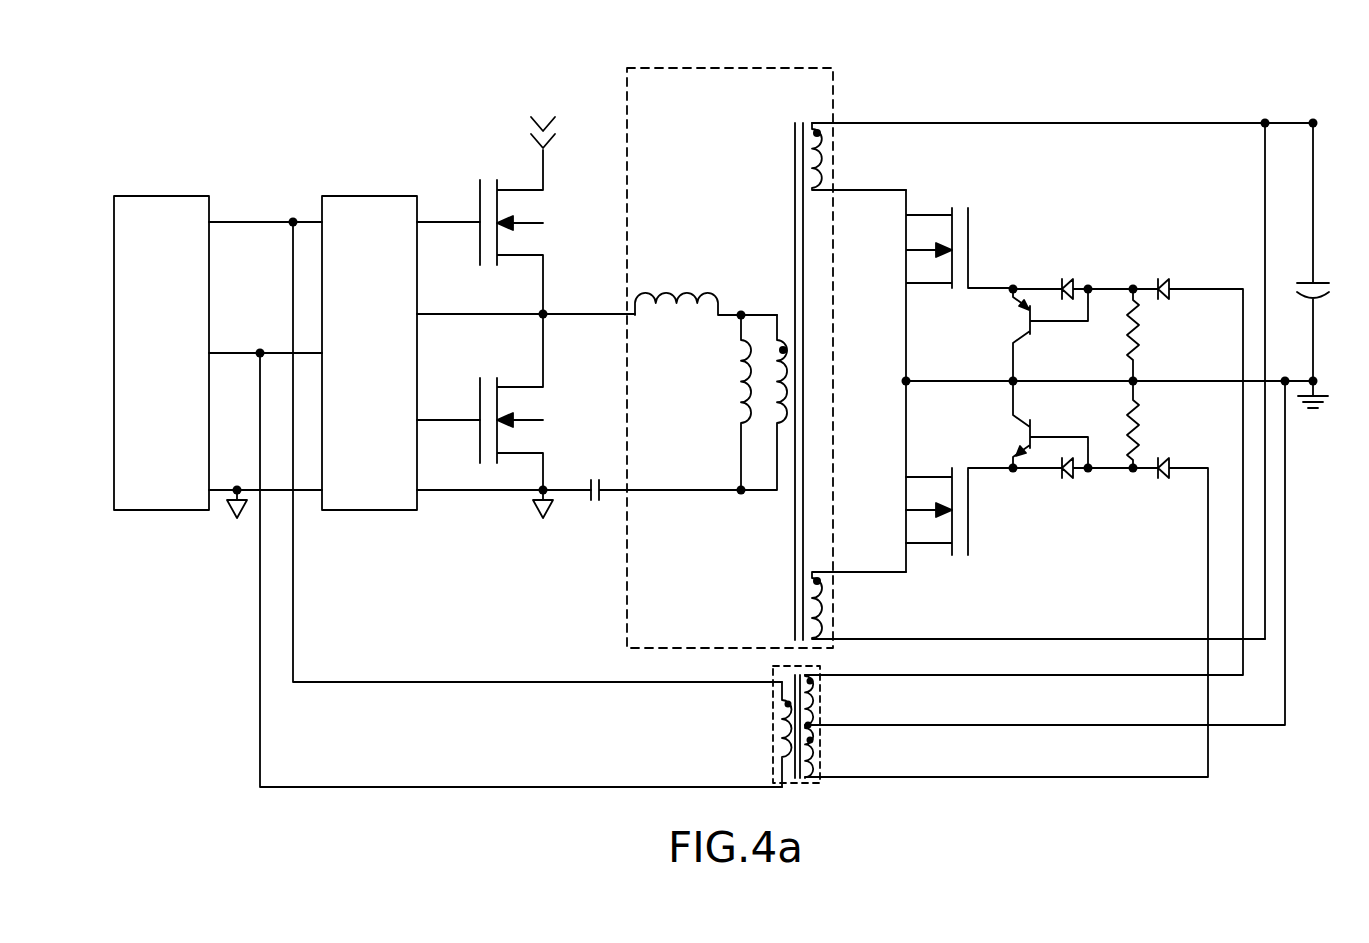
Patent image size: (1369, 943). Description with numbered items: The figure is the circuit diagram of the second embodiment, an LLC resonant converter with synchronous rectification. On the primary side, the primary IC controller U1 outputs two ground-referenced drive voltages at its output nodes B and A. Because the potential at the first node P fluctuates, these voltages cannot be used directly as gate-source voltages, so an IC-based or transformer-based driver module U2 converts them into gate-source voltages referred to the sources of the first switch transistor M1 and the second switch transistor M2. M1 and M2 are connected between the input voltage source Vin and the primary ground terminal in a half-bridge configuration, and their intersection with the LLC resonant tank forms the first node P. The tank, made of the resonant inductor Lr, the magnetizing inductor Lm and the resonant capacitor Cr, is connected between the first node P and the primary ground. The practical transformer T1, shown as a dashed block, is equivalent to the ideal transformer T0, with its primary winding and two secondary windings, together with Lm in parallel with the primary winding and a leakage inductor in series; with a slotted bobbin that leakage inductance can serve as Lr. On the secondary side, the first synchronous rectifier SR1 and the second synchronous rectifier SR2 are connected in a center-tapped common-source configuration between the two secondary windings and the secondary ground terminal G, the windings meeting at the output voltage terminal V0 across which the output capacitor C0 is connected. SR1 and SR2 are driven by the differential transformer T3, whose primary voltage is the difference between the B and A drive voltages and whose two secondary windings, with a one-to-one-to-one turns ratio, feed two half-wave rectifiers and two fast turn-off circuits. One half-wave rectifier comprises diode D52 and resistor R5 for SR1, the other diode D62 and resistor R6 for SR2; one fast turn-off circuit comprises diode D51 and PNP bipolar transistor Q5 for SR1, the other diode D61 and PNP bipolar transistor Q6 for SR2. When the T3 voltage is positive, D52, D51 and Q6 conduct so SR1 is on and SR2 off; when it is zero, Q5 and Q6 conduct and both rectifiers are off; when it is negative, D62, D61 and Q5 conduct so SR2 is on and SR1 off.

The primary IC controller U1 is at (161, 353).
The driver module U2 is at (369, 353).
The first switch transistor M1 is at (532, 232).
The second switch transistor M2 is at (532, 402).
The input voltage source Vin is at (540, 117).
The first node P is at (533, 329).
The drive voltage output node vA(t) A is at (257, 339).
The drive voltage output node vB(t) B is at (291, 208).
The resonant capacitor Cr is at (662, 475).
The resonant inductor Lr is at (706, 288).
The magnetizing inductor Lm is at (728, 402).
The practical transformer T1 is at (671, 68).
The ideal transformer T0 is at (1003, 366).
The differential transformer T3 is at (784, 720).
The first synchronous rectifier SR1 is at (933, 381).
The second synchronous rectifier SR2 is at (933, 511).
The secondary ground terminal G is at (1095, 383).
The PNP bipolar transistor Q5 is at (1037, 335).
The PNP bipolar transistor Q6 is at (1037, 424).
The diode D51 is at (1073, 275).
The diode D52 is at (1024, 463).
The diode D61 is at (1073, 483).
The diode D62 is at (1006, 617).
The resistor R5 is at (1148, 335).
The resistor R6 is at (1148, 424).
The output capacitor C0 is at (1329, 252).
The output voltage terminal V0 is at (1081, 375).